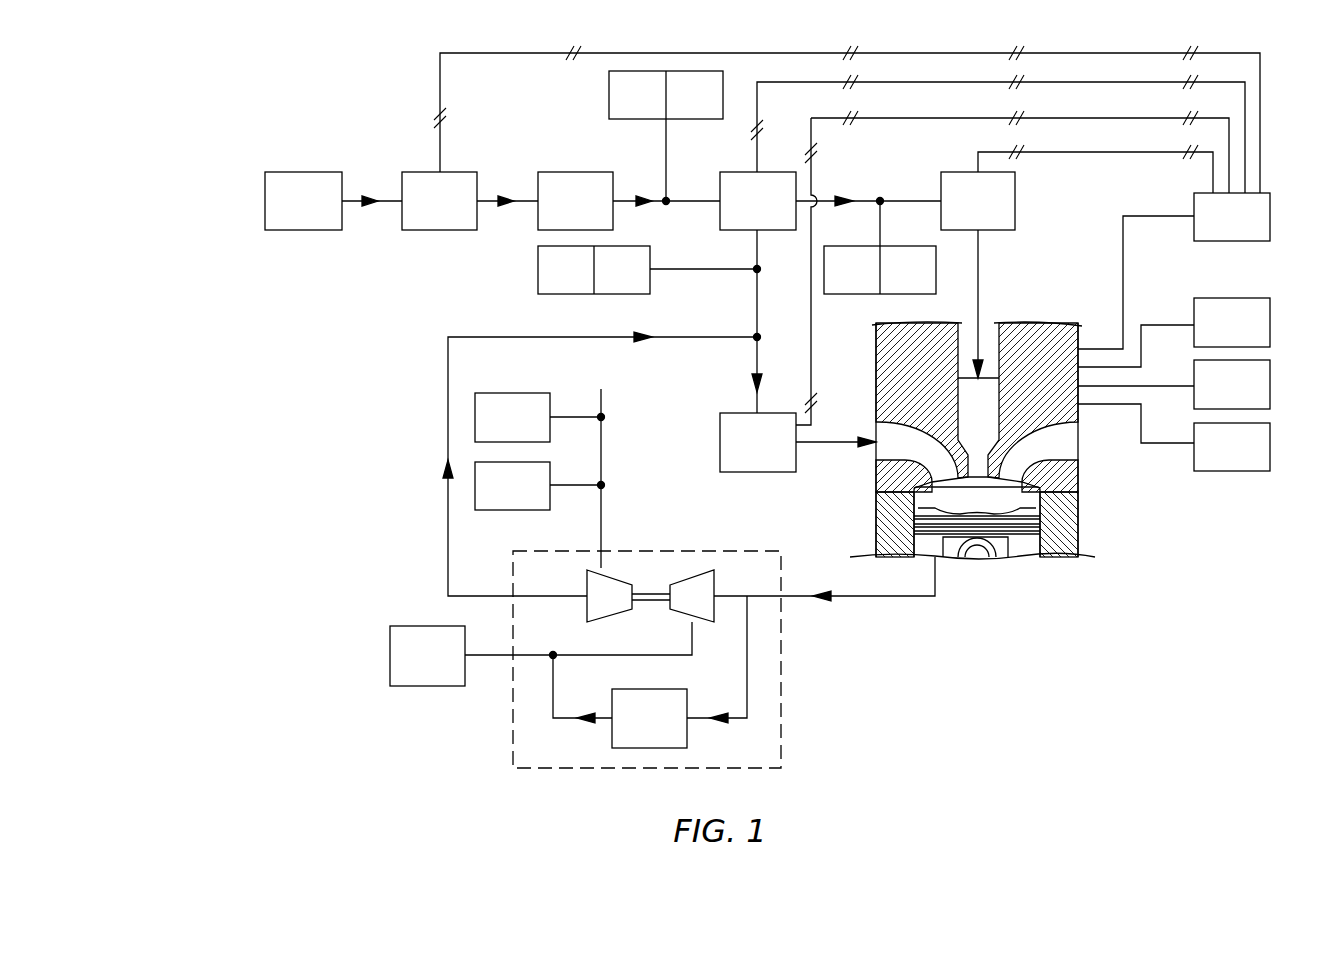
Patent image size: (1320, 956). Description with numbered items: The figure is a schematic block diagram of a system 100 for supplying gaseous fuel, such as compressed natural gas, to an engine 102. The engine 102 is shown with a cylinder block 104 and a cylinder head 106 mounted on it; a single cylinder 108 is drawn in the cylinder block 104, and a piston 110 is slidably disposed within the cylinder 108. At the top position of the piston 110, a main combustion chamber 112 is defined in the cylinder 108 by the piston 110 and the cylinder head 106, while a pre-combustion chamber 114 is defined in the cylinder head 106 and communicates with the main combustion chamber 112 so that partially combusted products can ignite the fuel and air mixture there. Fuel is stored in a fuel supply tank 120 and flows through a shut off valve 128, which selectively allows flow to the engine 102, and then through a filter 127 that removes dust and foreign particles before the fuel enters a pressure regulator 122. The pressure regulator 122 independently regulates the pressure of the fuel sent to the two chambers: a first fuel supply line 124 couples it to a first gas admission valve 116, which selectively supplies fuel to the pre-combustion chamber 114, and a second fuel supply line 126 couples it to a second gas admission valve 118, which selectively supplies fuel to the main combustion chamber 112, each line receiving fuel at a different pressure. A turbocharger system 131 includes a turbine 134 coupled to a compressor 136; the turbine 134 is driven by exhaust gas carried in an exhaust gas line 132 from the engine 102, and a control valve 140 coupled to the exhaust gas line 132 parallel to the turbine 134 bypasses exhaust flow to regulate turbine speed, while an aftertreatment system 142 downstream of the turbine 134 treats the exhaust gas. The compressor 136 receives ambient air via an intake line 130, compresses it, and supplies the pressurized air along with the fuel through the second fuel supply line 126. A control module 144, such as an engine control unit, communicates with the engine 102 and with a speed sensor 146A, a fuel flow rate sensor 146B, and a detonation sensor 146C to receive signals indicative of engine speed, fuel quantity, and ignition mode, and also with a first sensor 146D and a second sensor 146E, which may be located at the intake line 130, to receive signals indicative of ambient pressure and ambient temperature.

The system for supplying fuel 100 is at (222, 98).
The engine 102 is at (1042, 290).
The cylinder block 104 is at (1078, 530).
The cylinder head 106 is at (1080, 412).
The cylinder 108 is at (890, 528).
The piston 110 is at (1022, 548).
The main combustion chamber 112 is at (983, 495).
The pre-combustion chamber 114 is at (975, 451).
The first gas admission valve 116 is at (978, 201).
The second gas admission valve 118 is at (758, 442).
The fuel supply tank 120 is at (303, 201).
The pressure regulator 122 is at (758, 201).
The first fuel supply line 124 is at (907, 200).
The second fuel supply line 126 is at (757, 360).
The filter 127 is at (575, 201).
The shut off valve 128 is at (439, 201).
The intake line 130 is at (601, 447).
The turbocharger system 131 is at (781, 692).
The exhaust gas line 132 is at (893, 598).
The turbine 134 is at (714, 582).
The compressor 136 is at (587, 610).
The control valve 140 is at (649, 718).
The aftertreatment system 142 is at (427, 656).
The control module 144 is at (1174, 271).
The speed sensor 146A is at (1174, 332).
The fuel flow rate sensor 146B is at (1174, 384).
The detonation sensor 146C is at (1174, 437).
The first sensor 146D is at (512, 417).
The second sensor 146E is at (512, 486).